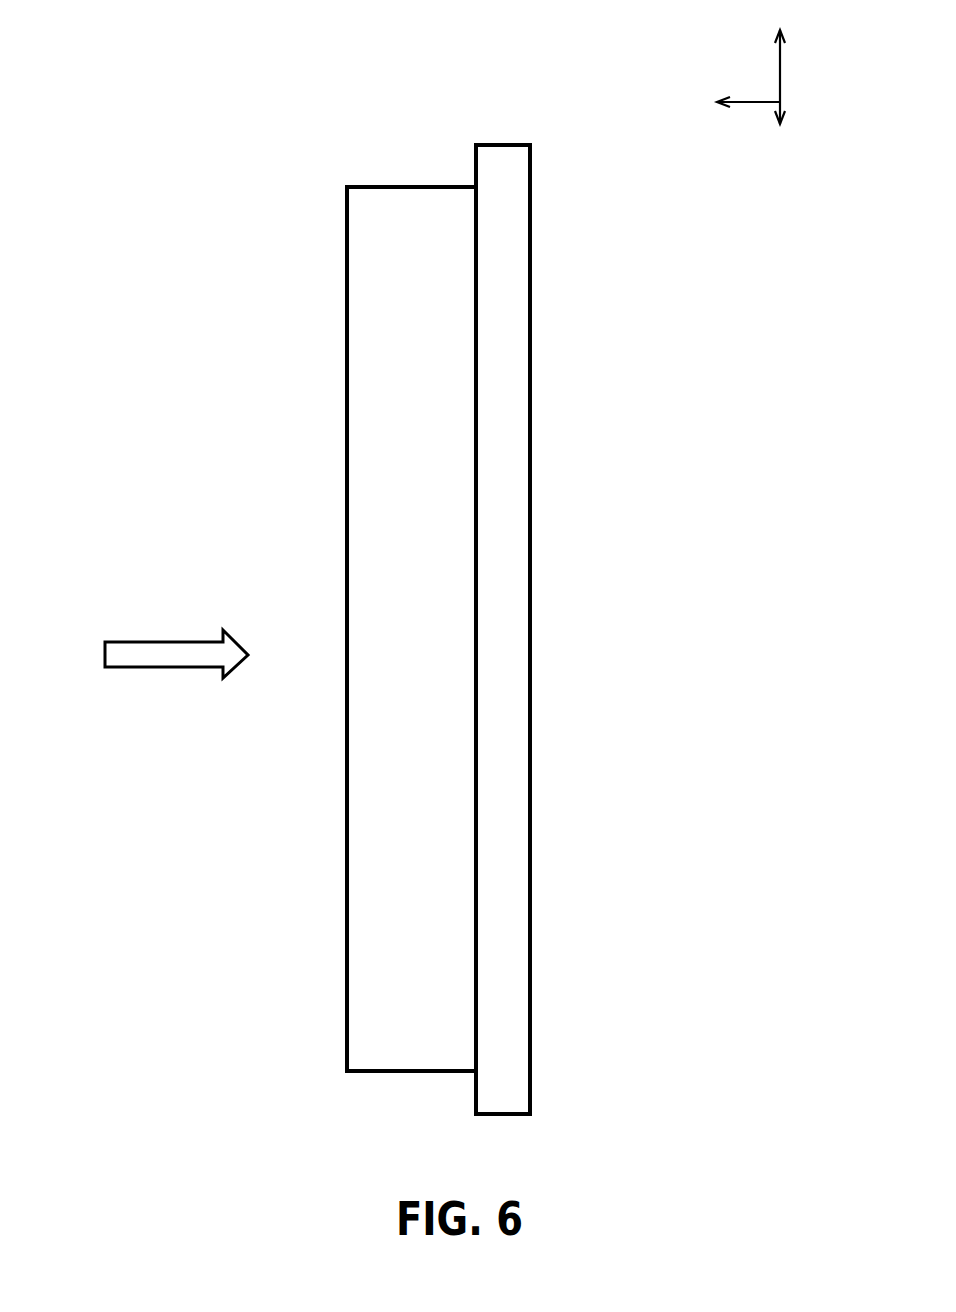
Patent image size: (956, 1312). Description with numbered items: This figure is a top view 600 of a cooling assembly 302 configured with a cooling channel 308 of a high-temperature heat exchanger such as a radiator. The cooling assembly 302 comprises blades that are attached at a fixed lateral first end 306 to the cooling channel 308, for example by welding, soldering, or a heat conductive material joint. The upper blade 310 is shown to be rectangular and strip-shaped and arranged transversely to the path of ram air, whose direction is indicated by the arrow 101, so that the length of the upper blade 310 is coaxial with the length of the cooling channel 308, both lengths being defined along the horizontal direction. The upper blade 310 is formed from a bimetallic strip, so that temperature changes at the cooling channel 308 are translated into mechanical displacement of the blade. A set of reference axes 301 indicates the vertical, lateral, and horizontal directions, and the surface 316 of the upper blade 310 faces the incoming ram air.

The top view 600 is at (258, 46).
The cooling assembly 302 is at (300, 187).
The upper blade 310 is at (438, 710).
The cooling channel 308 is at (531, 318).
The fixed lateral first end 306 is at (474, 185).
The input surface 316 is at (347, 540).
The set of reference axes 301 is at (724, 37).
The arrow 101 is at (138, 667).